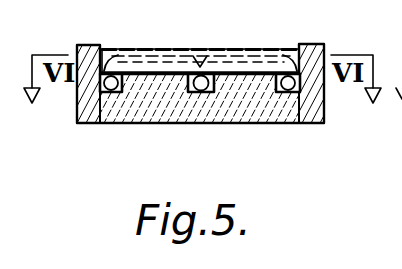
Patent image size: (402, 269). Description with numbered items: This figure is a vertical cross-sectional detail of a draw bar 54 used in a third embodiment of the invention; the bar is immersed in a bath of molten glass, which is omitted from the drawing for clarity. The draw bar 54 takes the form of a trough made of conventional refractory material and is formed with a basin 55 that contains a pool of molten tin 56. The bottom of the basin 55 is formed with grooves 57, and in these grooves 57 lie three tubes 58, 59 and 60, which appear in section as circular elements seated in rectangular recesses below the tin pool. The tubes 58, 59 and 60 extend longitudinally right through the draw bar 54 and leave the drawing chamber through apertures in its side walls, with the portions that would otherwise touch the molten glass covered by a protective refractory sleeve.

The draw bar 54 is at (147, 112).
The basin 55 is at (243, 78).
The pool of molten tin 56 is at (143, 53).
The grooves 57 is at (233, 72).
The tube 58 is at (90, 122).
The tube 59 is at (200, 94).
The tube 60 is at (301, 82).